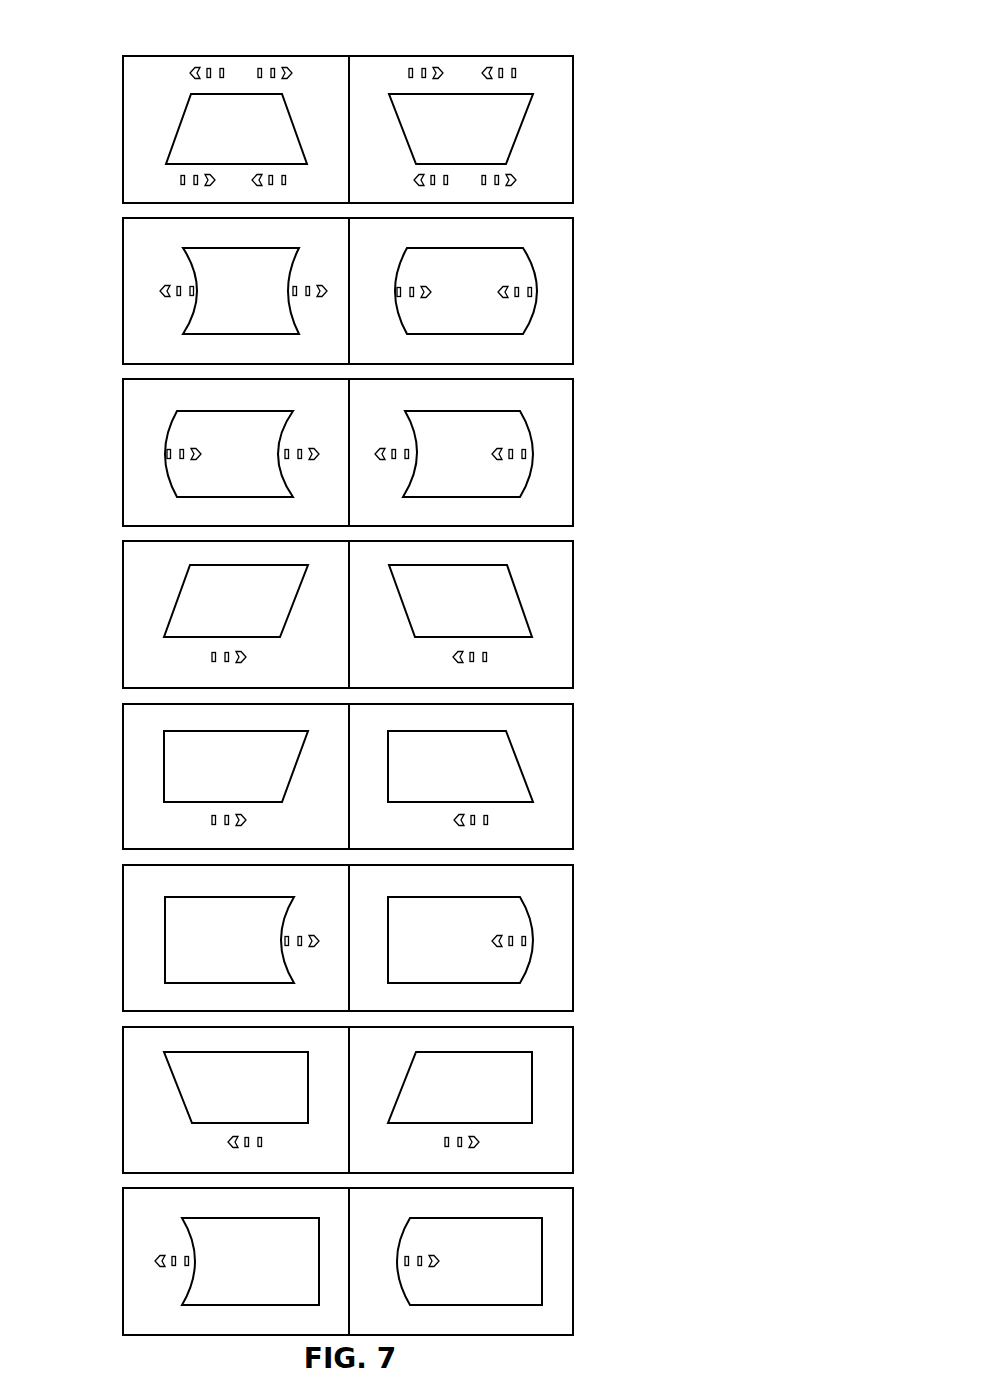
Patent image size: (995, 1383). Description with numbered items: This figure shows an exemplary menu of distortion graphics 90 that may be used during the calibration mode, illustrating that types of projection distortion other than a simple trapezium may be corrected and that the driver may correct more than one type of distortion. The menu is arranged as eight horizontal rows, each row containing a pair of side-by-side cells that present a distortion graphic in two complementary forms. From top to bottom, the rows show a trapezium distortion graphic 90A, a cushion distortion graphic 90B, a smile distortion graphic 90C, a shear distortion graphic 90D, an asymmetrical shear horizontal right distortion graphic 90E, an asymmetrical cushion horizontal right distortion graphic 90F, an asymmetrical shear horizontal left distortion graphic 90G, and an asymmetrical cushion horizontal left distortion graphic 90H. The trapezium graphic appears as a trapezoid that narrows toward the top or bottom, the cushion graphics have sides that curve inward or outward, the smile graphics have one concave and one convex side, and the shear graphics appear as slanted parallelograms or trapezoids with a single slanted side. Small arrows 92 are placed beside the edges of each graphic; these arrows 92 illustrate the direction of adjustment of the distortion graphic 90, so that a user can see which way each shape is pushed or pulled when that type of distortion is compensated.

The distortion graphics 90 is at (685, 27).
The trapezium distortion graphic 90A is at (553, 105).
The cushion distortion graphic 90B is at (553, 265).
The smile distortion graphic 90C is at (553, 411).
The shear distortion graphic 90D is at (553, 586).
The asymmetrical shear horizontal right distortion graphic 90E is at (553, 746).
The asymmetrical cushion horizontal right distortion graphic 90F is at (553, 906).
The asymmetrical shear horizontal left distortion graphic 90G is at (553, 1083).
The asymmetrical cushion horizontal left distortion graphic 90H is at (553, 1220).
The arrows 92 is at (196, 74).